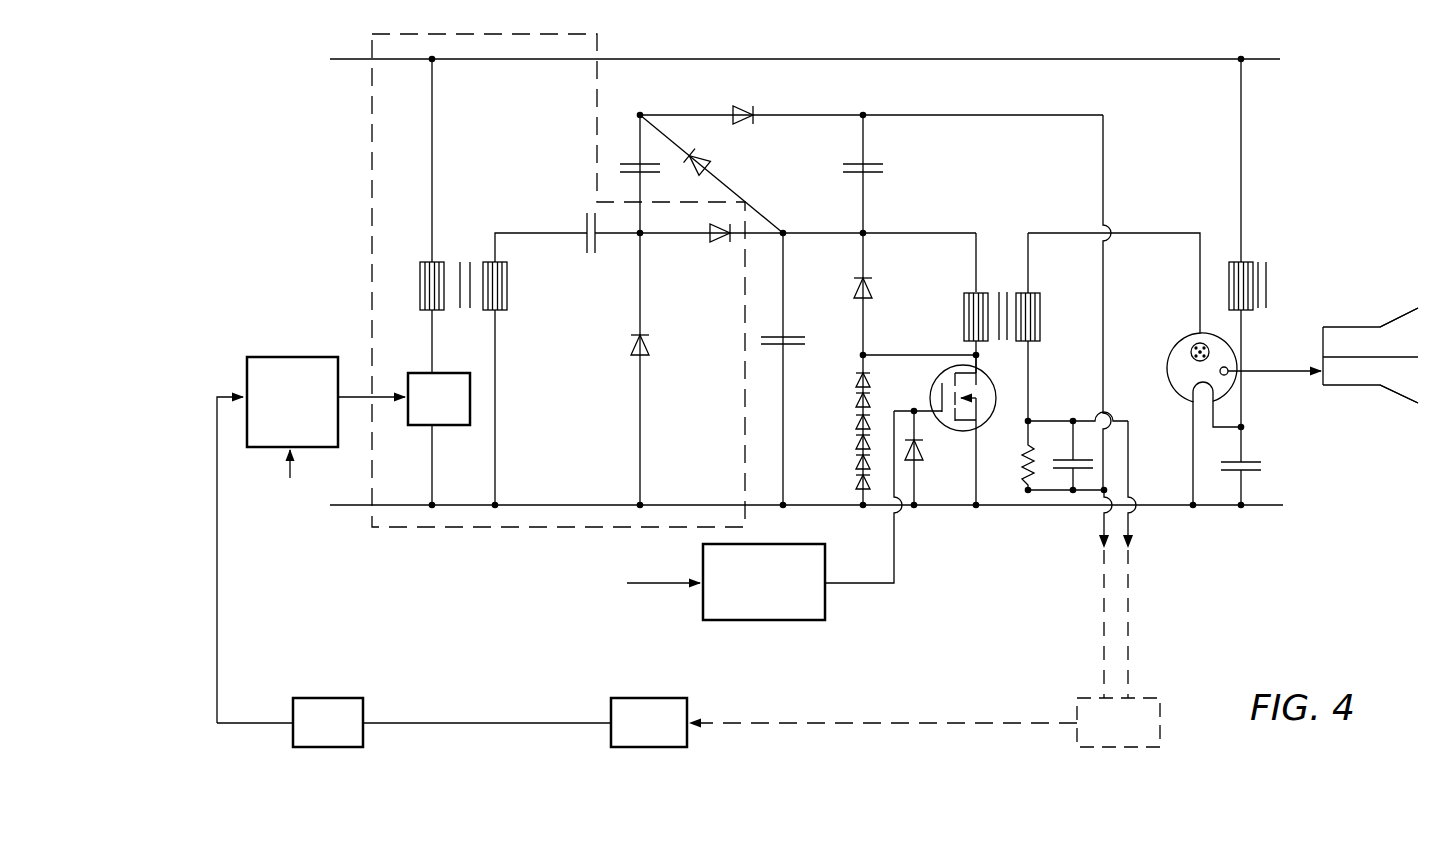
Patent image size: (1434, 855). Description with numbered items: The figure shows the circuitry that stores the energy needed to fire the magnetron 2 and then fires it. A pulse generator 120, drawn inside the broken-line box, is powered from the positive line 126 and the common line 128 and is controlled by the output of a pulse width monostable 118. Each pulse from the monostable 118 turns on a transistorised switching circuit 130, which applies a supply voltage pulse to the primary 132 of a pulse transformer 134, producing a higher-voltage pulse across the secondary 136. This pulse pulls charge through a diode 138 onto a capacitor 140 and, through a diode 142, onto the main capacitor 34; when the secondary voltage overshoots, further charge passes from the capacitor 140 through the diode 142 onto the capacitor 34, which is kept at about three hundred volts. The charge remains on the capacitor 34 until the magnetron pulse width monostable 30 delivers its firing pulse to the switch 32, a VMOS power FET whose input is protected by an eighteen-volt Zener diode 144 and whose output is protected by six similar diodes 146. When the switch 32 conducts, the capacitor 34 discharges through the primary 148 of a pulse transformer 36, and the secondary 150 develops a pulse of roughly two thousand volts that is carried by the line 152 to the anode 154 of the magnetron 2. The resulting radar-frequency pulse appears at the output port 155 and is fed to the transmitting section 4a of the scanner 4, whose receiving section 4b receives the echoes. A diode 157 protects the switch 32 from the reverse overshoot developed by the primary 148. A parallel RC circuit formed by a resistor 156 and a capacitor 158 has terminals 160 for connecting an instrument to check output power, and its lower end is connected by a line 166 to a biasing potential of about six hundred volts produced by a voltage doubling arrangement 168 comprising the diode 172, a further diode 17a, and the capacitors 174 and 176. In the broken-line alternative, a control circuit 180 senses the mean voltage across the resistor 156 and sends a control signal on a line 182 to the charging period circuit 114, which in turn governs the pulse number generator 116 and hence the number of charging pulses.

The positive line 126 is at (330, 58).
The common line 128 is at (343, 507).
The pulse generator 120 is at (597, 32).
The pulse width monostable 118 is at (305, 357).
The transistorised switching circuit 130 is at (446, 427).
The primary 132 is at (424, 266).
The pulse transformer 134 is at (482, 282).
The secondary 136 is at (509, 284).
The capacitor 140 is at (585, 262).
The diode 142 is at (713, 251).
The diode 138 is at (654, 345).
The main capacitor 34 is at (802, 330).
The diode 172 is at (756, 108).
The diode 17a is at (712, 160).
The capacitor 174 is at (660, 173).
The capacitor 176 is at (880, 168).
The voltage doubling arrangement 168 is at (890, 103).
The line 166 is at (1101, 167).
The line 152 is at (1149, 233).
The diode 157 is at (872, 292).
The Zener diodes 146 is at (852, 436).
The primary 148 is at (961, 300).
The pulse transformer 36 is at (1006, 327).
The secondary 150 is at (1042, 322).
The switch 32 is at (985, 424).
The Zener diode 144 is at (921, 457).
The magnetron pulse width monostable 30 is at (752, 622).
The resistor 156 is at (1026, 455).
The capacitor 158 is at (1063, 440).
The terminals 160 is at (1152, 549).
The magnetron 2 is at (1230, 408).
The anode 154 is at (1189, 349).
The output port 155 is at (1229, 366).
The scanner 4 is at (1365, 352).
The transmitting section 4a is at (1395, 393).
The receiving section 4b is at (1399, 318).
The pulse number generator 116 is at (414, 722).
The charging period circuit 114 is at (649, 722).
The line 182 is at (866, 720).
The control circuit 180 is at (1118, 722).